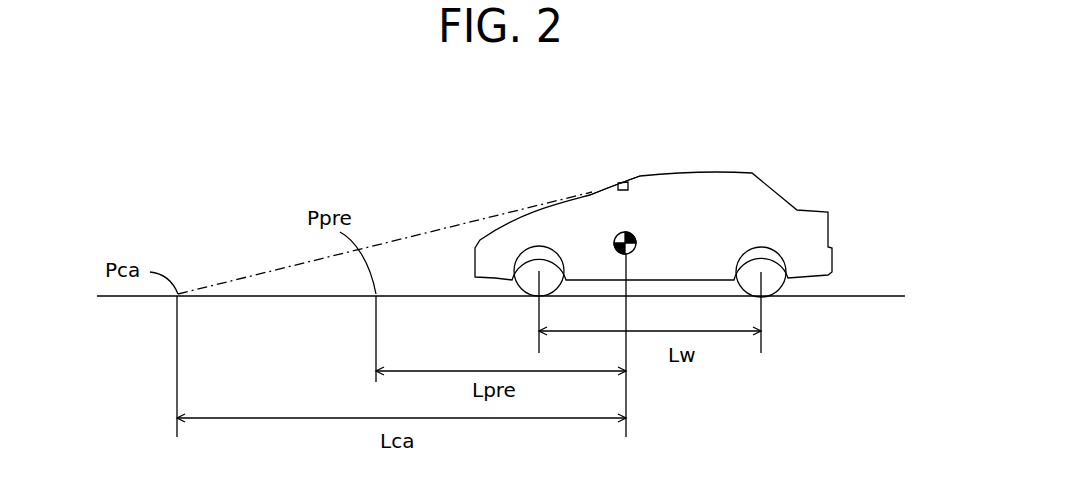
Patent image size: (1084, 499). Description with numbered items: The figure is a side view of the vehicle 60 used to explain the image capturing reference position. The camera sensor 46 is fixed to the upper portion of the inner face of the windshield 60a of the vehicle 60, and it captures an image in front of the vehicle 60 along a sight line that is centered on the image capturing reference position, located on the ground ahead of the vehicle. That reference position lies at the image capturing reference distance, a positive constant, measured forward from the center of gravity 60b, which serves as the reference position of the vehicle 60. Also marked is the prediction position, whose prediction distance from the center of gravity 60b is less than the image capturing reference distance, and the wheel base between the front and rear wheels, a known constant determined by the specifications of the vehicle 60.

The camera sensor 46 is at (622, 181).
The vehicle 60 is at (758, 175).
The windshield 60a is at (588, 195).
The center of gravity 60b is at (634, 232).